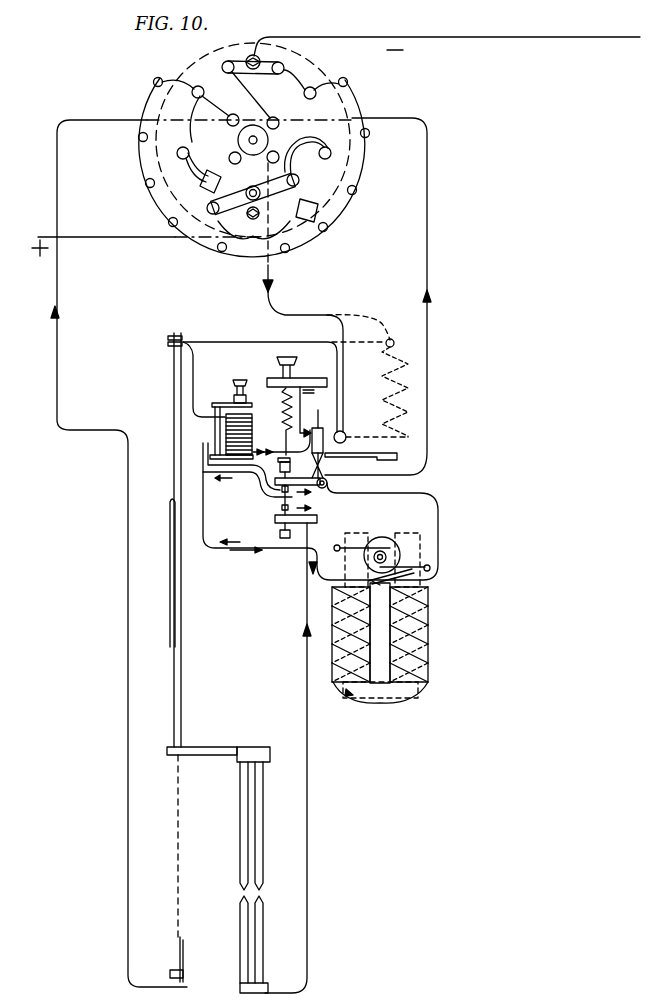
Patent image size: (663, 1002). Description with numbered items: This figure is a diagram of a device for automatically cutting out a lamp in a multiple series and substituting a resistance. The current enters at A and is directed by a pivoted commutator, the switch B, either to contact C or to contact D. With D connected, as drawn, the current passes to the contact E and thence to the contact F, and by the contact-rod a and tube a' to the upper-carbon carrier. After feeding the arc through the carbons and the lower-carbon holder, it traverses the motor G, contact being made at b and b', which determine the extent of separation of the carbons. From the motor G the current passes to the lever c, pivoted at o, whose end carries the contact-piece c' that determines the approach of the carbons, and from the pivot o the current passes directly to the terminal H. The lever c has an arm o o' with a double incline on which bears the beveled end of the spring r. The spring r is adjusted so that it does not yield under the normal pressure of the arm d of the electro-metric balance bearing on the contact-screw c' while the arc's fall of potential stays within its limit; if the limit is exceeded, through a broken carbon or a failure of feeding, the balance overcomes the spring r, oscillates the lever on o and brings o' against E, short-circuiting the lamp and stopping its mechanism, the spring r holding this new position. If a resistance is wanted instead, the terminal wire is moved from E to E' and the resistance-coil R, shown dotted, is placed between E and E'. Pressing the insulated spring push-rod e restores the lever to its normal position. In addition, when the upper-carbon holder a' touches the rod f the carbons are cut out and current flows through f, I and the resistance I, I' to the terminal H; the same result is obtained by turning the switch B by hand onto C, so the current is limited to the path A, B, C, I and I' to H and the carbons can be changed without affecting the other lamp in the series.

The terminal H is at (431, 70).
The resistance I is at (197, 89).
The resistance I' is at (317, 74).
The commutator contact C is at (198, 173).
The switch B is at (253, 195).
The commutator contact D is at (308, 179).
The current entry point A is at (103, 249).
The contact F is at (196, 364).
The contact-rod a is at (169, 540).
The insulated spring push-rod e is at (297, 403).
The lever arm o' is at (323, 444).
The contact E is at (371, 430).
The contact E' is at (402, 339).
The resistance-coil R is at (382, 392).
The spring r is at (361, 461).
The contact-piece c' is at (294, 469).
The lever c is at (294, 494).
The pivot o is at (320, 526).
The arm of the electro-metric balance d is at (247, 474).
The contact b is at (303, 519).
The contact b' is at (255, 536).
The motor G is at (381, 618).
The tube a' is at (202, 831).
The rod f is at (184, 965).